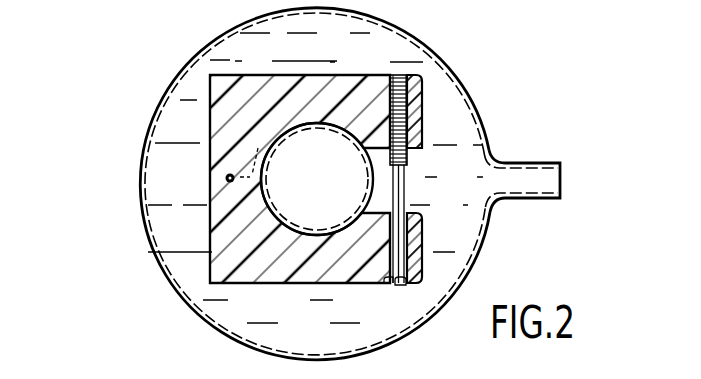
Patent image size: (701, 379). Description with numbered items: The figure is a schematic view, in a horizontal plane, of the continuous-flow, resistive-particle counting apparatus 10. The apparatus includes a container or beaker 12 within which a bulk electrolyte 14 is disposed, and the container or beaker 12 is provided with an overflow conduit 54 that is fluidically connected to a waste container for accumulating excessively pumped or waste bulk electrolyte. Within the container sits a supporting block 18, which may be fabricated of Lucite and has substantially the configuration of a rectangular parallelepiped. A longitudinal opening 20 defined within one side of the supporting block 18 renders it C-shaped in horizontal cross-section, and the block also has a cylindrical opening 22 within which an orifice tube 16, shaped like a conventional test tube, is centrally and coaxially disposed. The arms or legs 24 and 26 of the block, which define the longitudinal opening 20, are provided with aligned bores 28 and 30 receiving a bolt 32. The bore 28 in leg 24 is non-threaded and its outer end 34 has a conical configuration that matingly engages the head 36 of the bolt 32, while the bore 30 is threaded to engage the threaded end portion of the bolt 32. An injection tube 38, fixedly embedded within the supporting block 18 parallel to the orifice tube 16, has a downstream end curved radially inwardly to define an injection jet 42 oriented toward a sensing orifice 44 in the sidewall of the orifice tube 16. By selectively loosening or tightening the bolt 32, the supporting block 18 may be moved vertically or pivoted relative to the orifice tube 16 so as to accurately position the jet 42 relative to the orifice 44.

The continuous-flow resistive-particle counting apparatus 10 is at (146, 255).
The container or beaker 12 is at (193, 307).
The bulk electrolyte 14 is at (190, 268).
The orifice tube 16 is at (330, 128).
The supporting block 18 is at (281, 272).
The longitudinal opening 20 is at (412, 190).
The cylindrical opening 22 is at (292, 228).
The leg of block 24 is at (418, 232).
The leg of block 26 is at (415, 108).
The bore 28 is at (376, 247).
The bore 30 is at (386, 86).
The bolt 32 is at (405, 153).
The outer end of bore 34 is at (386, 284).
The head of bolt 36 is at (402, 287).
The injection tube 38 is at (226, 177).
The injection jet 42 is at (259, 150).
The sensing orifice 44 is at (264, 177).
The overflow conduit 54 is at (529, 163).